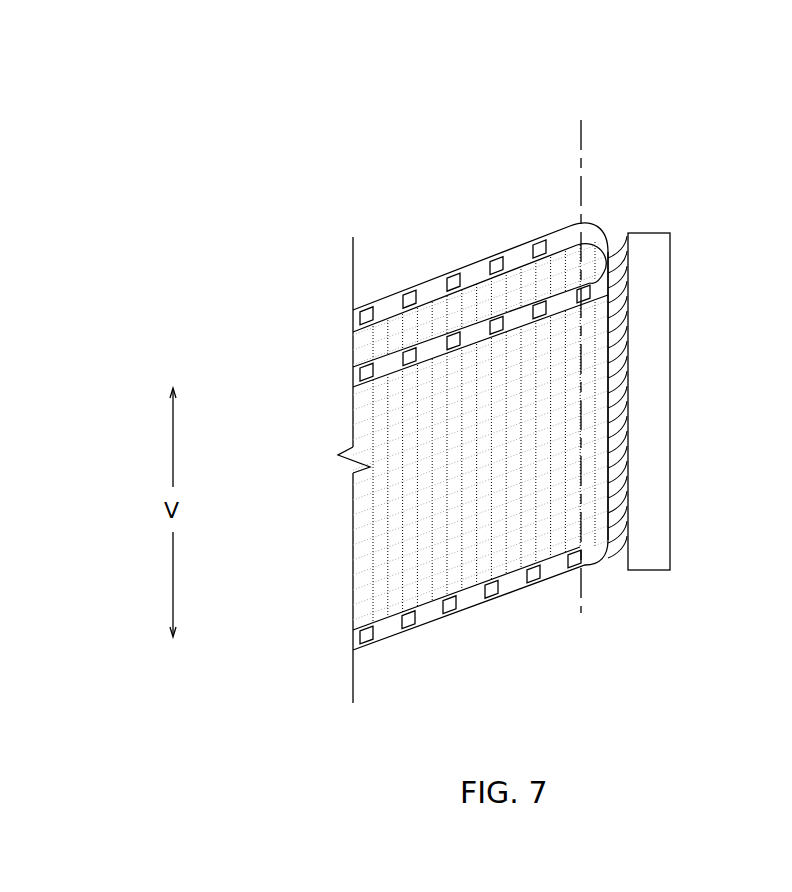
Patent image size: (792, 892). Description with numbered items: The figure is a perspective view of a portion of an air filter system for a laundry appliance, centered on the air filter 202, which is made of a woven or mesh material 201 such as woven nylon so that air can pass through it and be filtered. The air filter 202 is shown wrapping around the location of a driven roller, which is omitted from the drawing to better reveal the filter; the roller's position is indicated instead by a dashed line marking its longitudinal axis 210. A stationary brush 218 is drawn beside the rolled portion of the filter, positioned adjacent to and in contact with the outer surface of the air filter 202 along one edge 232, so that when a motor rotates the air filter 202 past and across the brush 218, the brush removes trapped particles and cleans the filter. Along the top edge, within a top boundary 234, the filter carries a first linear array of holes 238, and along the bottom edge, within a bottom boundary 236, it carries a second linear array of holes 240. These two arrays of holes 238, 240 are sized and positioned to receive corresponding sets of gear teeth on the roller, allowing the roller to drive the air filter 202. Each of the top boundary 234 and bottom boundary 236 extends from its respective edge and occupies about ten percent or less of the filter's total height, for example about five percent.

The woven or mesh material 201 is at (373, 548).
The air filter 202 is at (325, 173).
The longitudinal axis 210 is at (580, 135).
The brush 218 is at (610, 567).
The edge 232 is at (612, 232).
The top boundary 234 is at (517, 262).
The bottom boundary 236 is at (515, 578).
The first linear array of holes 238 is at (410, 300).
The second linear array of holes 240 is at (447, 602).